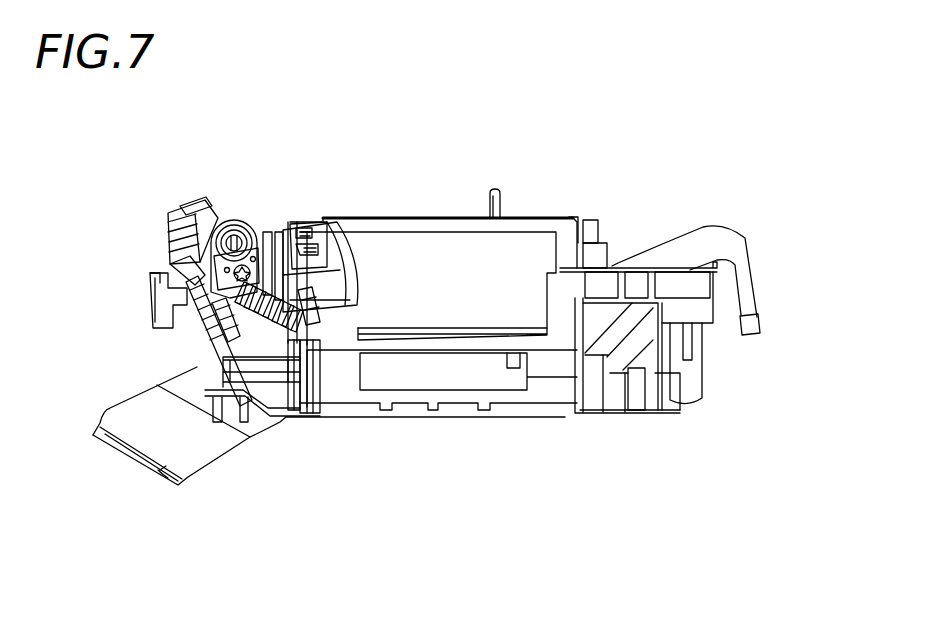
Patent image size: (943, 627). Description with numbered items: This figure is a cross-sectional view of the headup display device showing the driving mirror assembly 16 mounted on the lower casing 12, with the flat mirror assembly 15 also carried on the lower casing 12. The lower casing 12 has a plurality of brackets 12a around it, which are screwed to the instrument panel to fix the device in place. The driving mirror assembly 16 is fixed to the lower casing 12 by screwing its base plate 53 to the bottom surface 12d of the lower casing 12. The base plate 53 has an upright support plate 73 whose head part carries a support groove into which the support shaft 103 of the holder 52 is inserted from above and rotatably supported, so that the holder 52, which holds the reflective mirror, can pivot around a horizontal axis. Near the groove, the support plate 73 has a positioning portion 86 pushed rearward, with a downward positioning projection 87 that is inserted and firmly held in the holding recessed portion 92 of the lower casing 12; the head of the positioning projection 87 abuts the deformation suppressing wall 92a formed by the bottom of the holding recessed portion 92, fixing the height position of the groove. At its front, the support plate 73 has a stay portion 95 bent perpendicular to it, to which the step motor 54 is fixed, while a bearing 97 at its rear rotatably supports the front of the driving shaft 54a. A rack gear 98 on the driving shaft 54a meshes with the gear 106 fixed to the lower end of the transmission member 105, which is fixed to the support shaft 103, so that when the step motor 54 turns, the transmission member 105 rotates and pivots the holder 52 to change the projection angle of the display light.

The flat mirror assembly 15 is at (518, 218).
The lower casing 12 is at (632, 415).
The bracket 12a is at (760, 307).
The bottom surface 12d is at (472, 383).
The driving mirror assembly 16 is at (238, 213).
The holder 52 is at (185, 207).
The base plate 53 is at (292, 340).
The step motor 54 is at (347, 277).
The driving shaft 54a is at (152, 468).
The support plate 73 is at (257, 322).
The positioning portion 86 is at (173, 250).
The positioning projection 87 is at (177, 290).
The holding recessed portion 92 is at (150, 303).
The deformation suppressing wall 92a is at (150, 287).
The stay portion 95 is at (307, 303).
The bearing 97 is at (217, 343).
The rack gear 98 is at (266, 350).
The support shaft 103 is at (242, 236).
The transmission member 105 is at (255, 247).
The gear 106 is at (309, 227).